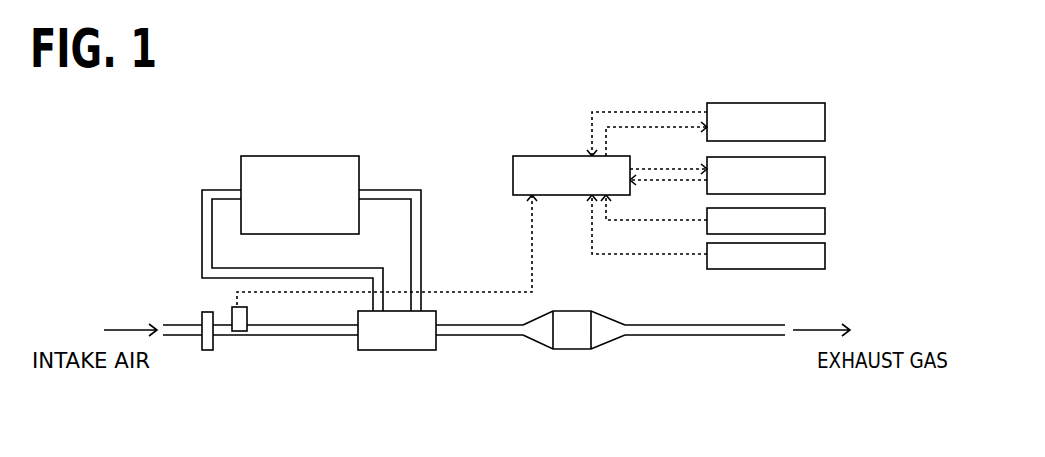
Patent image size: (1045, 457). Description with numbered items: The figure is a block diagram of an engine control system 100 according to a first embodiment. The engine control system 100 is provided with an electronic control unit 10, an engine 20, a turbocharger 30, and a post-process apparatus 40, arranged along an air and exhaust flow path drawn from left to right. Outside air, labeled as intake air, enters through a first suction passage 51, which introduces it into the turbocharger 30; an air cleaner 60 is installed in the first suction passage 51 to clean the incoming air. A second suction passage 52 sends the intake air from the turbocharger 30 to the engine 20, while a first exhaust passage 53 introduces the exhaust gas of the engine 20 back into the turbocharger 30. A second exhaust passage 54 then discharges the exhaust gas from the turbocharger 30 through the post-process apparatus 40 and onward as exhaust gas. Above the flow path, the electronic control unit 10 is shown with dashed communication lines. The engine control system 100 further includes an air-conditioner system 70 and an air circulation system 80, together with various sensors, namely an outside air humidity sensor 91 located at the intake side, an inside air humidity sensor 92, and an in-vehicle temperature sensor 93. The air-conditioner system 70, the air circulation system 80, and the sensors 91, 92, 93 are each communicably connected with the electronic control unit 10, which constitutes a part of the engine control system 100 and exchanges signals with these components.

The engine control system 100 is at (671, 44).
The electronic control unit 10 is at (532, 156).
The engine 20 is at (317, 156).
The turbocharger 30 is at (402, 350).
The post-process apparatus 40 is at (575, 350).
The first suction passage 51 is at (296, 336).
The second suction passage 52 is at (203, 200).
The first exhaust passage 53 is at (407, 190).
The second exhaust passage 54 is at (693, 336).
The air cleaner 60 is at (208, 350).
The air-conditioner system 70 is at (825, 118).
The air circulation system 80 is at (825, 173).
The outside air humidity sensor 91 is at (231, 313).
The inside air humidity sensor 92 is at (825, 220).
The in-vehicle temperature sensor 93 is at (825, 257).